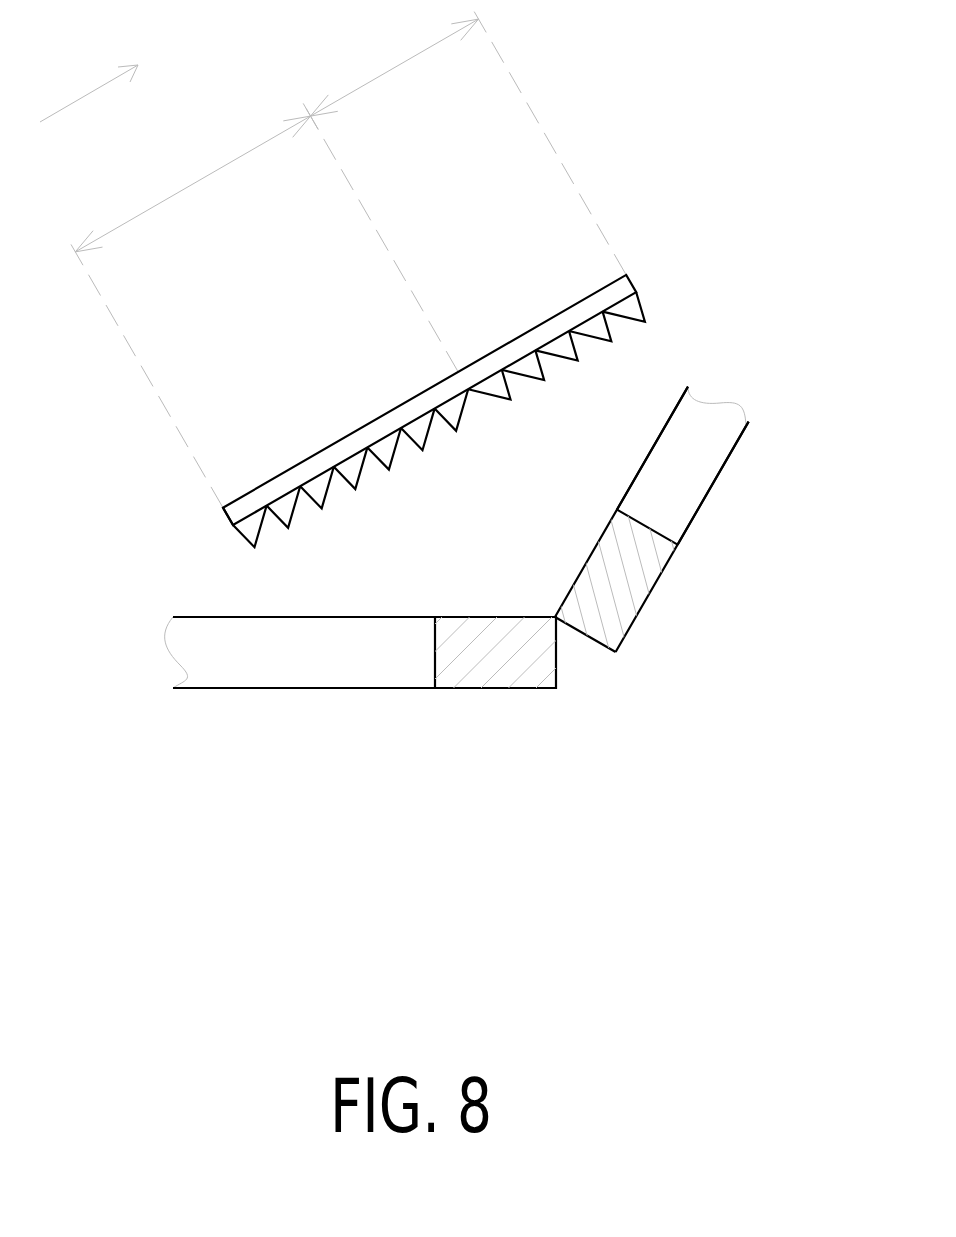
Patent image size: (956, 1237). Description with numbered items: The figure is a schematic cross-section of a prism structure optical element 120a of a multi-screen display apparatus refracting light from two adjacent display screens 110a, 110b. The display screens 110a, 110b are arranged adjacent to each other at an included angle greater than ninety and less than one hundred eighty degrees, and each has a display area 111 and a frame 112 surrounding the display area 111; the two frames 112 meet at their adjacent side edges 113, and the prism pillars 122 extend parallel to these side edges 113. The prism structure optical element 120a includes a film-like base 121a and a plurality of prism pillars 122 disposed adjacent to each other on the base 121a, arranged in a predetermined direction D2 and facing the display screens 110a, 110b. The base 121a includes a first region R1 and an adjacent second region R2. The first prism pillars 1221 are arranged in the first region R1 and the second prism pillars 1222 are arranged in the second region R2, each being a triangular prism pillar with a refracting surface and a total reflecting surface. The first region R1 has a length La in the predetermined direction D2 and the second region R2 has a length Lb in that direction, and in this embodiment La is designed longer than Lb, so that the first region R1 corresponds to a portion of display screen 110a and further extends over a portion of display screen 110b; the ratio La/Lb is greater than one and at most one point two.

The predetermined direction D2 is at (89, 89).
The first region R1 is at (263, 305).
The length of the first region La is at (263, 305).
The second region R2 is at (469, 140).
The length of the second region Lb is at (469, 140).
The prism structure optical element 120a is at (192, 543).
The base 121a is at (550, 332).
The prism pillars 122 is at (462, 430).
The first prism pillars 1221 is at (250, 530).
The second prism pillars 1222 is at (632, 306).
The display screen 110a is at (465, 782).
The display screen 110b is at (795, 778).
The display area 111 is at (690, 448).
The frame 112 is at (539, 564).
The side edges 113 is at (627, 610).